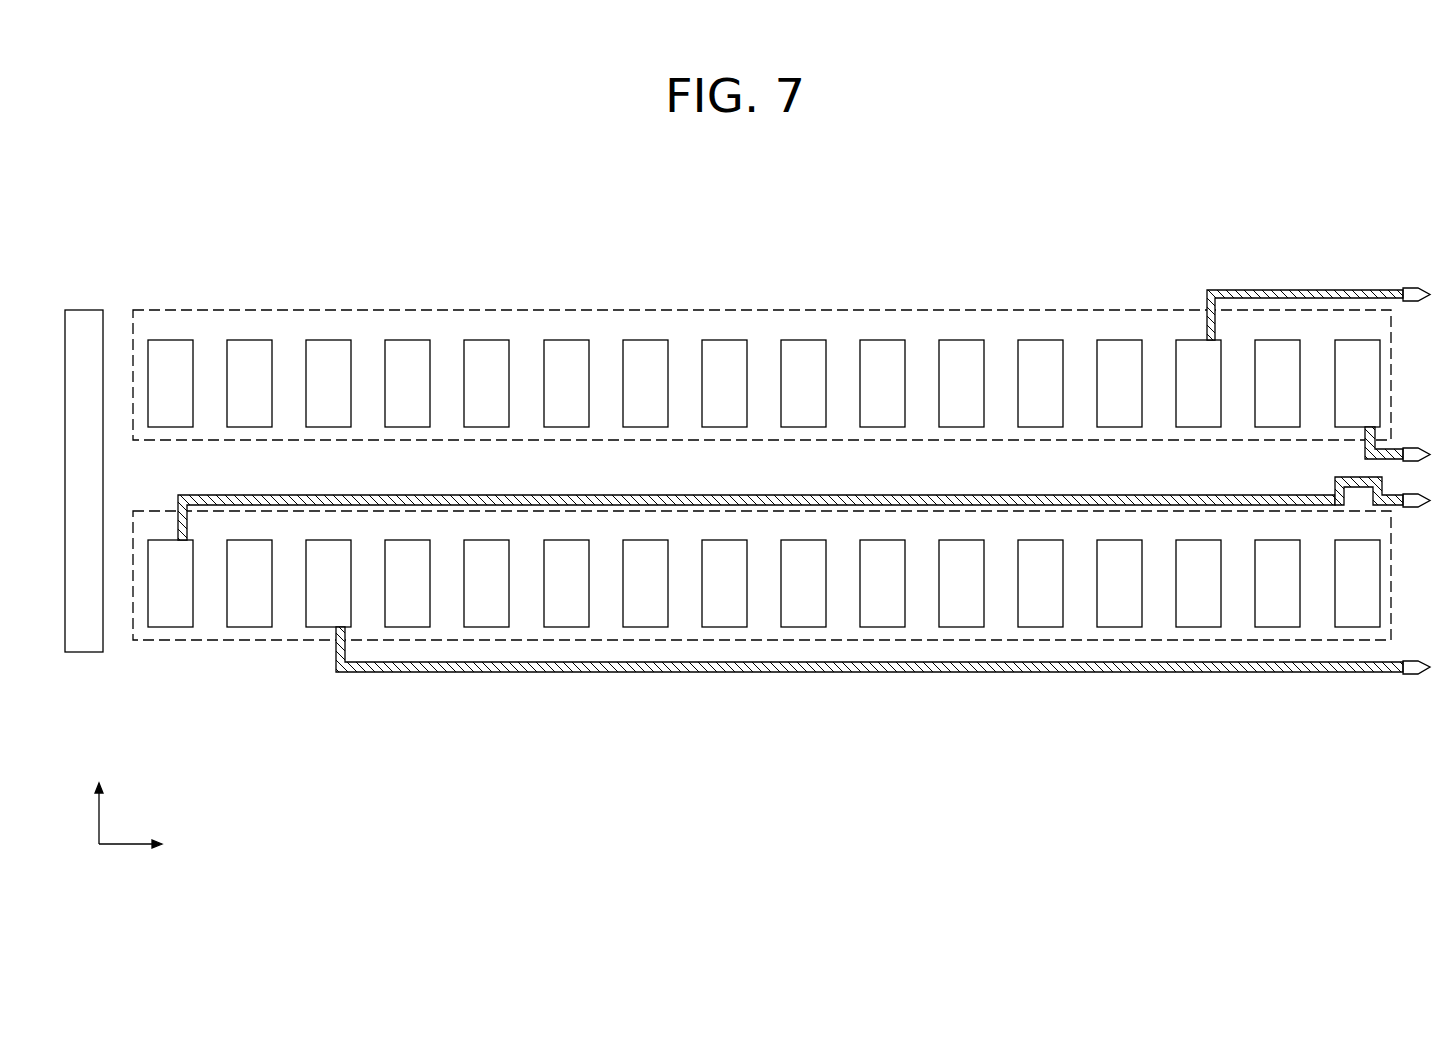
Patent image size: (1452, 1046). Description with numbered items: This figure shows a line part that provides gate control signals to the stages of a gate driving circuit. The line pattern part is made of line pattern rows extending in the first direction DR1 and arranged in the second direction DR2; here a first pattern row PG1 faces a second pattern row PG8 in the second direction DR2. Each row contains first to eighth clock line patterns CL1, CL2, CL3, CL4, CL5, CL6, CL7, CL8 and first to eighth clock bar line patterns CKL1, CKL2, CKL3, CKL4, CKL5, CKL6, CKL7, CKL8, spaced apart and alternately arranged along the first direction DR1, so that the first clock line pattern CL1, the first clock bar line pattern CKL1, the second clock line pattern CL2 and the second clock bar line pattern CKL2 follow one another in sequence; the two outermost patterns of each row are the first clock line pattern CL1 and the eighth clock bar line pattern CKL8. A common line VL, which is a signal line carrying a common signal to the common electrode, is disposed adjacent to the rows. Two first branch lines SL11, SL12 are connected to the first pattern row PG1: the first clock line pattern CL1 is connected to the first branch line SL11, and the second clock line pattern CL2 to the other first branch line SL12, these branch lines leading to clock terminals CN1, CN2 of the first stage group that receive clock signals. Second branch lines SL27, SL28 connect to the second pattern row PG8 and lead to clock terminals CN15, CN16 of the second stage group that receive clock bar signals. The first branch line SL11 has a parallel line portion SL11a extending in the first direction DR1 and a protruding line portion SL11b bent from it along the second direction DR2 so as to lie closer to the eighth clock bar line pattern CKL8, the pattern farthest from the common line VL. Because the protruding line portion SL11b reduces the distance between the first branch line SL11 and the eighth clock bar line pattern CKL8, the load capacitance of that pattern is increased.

The common line VL is at (78, 310).
The second pattern row PG8 is at (151, 310).
The first pattern row PG1 is at (178, 650).
The first clock line pattern CL1 is at (170, 483).
The second clock line pattern CL2 is at (328, 483).
The third clock line pattern CL3 is at (486, 483).
The fourth clock line pattern CL4 is at (645, 483).
The fifth clock line pattern CL5 is at (803, 483).
The sixth clock line pattern CL6 is at (961, 483).
The seventh clock line pattern CL7 is at (1119, 483).
The eighth clock line pattern CL8 is at (1277, 483).
The first clock bar line pattern CKL1 is at (249, 483).
The second clock bar line pattern CKL2 is at (407, 483).
The third clock bar line pattern CKL3 is at (566, 483).
The fourth clock bar line pattern CKL4 is at (724, 483).
The fifth clock bar line pattern CKL5 is at (882, 483).
The sixth clock bar line pattern CKL6 is at (1040, 483).
The seventh clock bar line pattern CKL7 is at (1198, 483).
The eighth clock bar line pattern CKL8 is at (1357, 483).
The second branch line SL27 is at (1302, 290).
The second branch line SL28 is at (1365, 451).
The first branch line SL11 is at (790, 491).
The parallel line portion SL11a is at (1003, 495).
The protruding line portion SL11b is at (1345, 481).
The first branch line SL12 is at (752, 672).
The clock terminal CN15 is at (1412, 288).
The clock terminal CN16 is at (1412, 448).
The clock terminal CN1 is at (1417, 507).
The clock terminal CN2 is at (1412, 661).
The first direction DR1 is at (150, 844).
The second direction DR2 is at (99, 800).